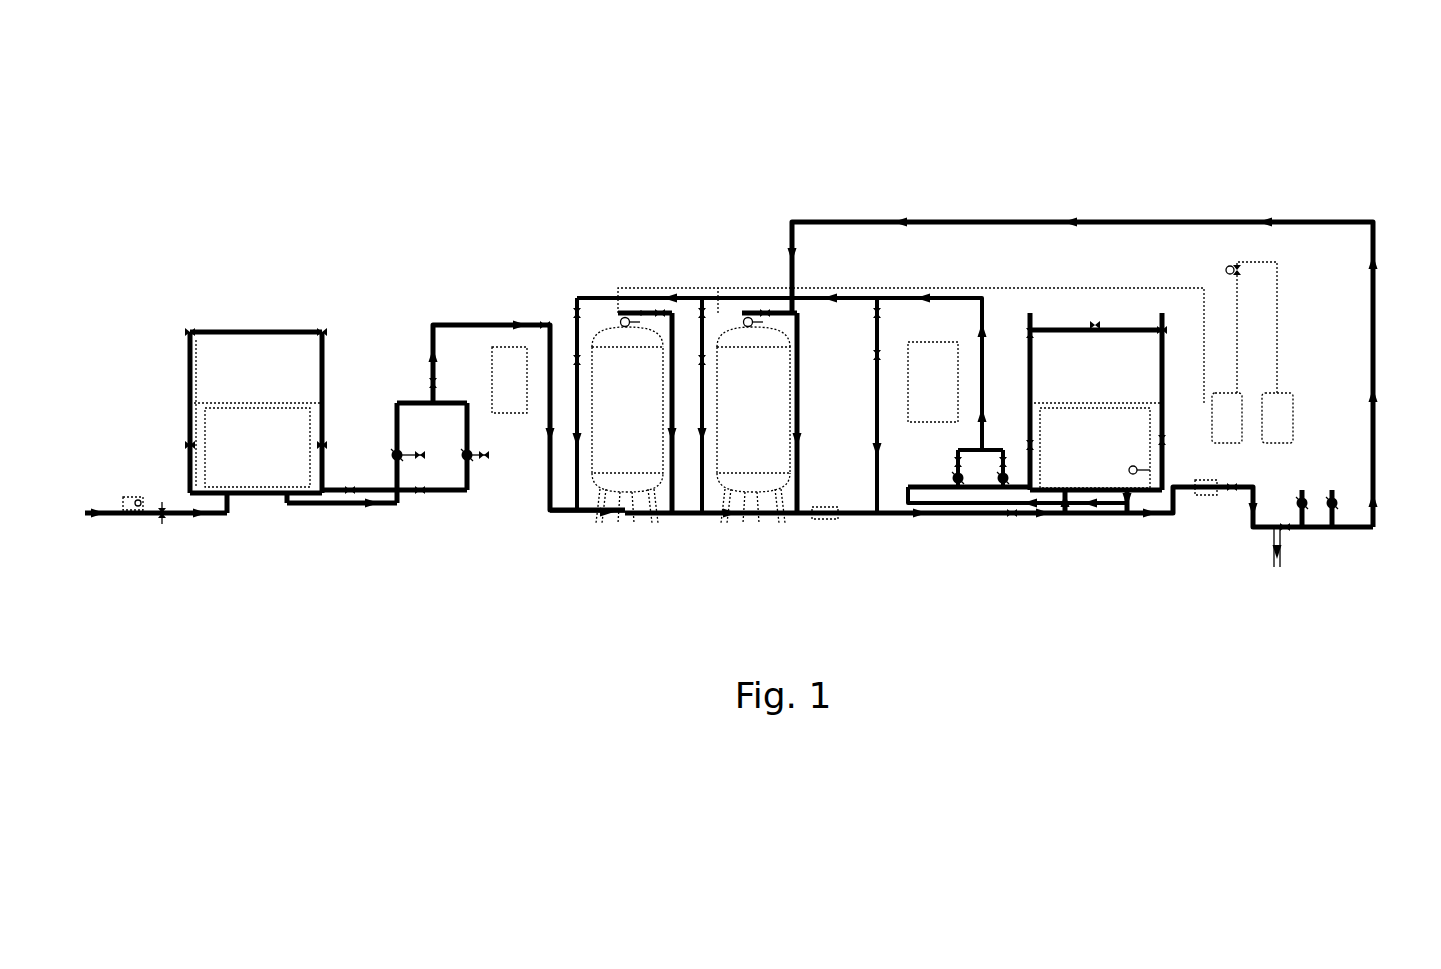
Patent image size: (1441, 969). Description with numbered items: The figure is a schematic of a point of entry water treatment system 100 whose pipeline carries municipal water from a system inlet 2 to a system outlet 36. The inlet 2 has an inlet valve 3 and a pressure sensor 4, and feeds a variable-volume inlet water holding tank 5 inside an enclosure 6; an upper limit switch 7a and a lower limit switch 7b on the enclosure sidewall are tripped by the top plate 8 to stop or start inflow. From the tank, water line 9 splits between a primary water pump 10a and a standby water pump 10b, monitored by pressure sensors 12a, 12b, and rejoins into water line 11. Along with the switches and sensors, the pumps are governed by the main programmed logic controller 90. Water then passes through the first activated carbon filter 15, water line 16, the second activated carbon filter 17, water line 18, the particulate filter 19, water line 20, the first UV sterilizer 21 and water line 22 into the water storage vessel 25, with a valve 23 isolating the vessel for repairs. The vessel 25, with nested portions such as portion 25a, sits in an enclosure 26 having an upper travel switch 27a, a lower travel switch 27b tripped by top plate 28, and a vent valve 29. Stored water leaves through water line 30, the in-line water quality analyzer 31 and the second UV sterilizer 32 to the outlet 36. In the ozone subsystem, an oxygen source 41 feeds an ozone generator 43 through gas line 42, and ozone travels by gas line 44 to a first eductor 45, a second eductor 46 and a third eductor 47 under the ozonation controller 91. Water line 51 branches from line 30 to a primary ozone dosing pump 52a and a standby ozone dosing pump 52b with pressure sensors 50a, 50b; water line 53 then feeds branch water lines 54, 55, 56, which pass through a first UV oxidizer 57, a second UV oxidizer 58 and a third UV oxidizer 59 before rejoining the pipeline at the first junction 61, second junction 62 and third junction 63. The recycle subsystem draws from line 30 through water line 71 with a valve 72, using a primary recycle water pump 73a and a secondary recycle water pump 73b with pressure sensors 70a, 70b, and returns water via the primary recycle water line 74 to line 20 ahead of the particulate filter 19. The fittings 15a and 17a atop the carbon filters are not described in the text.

The water treatment system 100 is at (497, 112).
The system inlet 2 is at (113, 516).
The inlet valve 3 is at (162, 520).
The pressure sensor 4 is at (135, 495).
The inlet water holding tank 5 is at (257, 447).
The enclosure 6 is at (188, 395).
The upper limit switch 7a is at (188, 338).
The lower limit switch 7b is at (188, 445).
The top plate 8 is at (300, 405).
The water line 9 is at (308, 505).
The primary water pump 10a is at (388, 455).
The standby water pump 10b is at (462, 466).
The pressure sensor 12a is at (418, 452).
The pressure sensor 12b is at (486, 455).
The water line 11 is at (472, 322).
The main programmed logic controller 90 is at (509, 380).
The first activated carbon filter 15 is at (627, 425).
The first vessel vent 15a is at (624, 318).
The water line 16 is at (652, 318).
The second activated carbon filter 17 is at (753, 425).
The second vessel vent 17a is at (746, 318).
The water line 18 is at (772, 318).
The particulate filter 19 is at (822, 520).
The water line 20 is at (905, 520).
The first UV sterilizer 21 is at (955, 520).
The water line 22 is at (1012, 520).
The valve 23 is at (1030, 512).
The water storage vessel 25 is at (1095, 448).
The portion of the vessel 25a is at (1150, 468).
The enclosure 26 is at (1165, 360).
The upper travel switch 27a is at (1028, 355).
The lower travel switch 27b is at (1028, 445).
The top plate 28 is at (1120, 403).
The vent valve 29 is at (1094, 322).
The water line 30 is at (1172, 522).
The in-line water quality analyzer 31 is at (1204, 497).
The second UV sterilizer 32 is at (1232, 495).
The system outlet 36 is at (1276, 568).
The oxygen source 41 is at (1277, 418).
The gas line 42 is at (1279, 312).
The ozone generator 43 is at (1244, 352).
The gas line 44 is at (1000, 287).
The first eductor 45 is at (872, 313).
The second eductor 46 is at (700, 358).
The third eductor 47 is at (575, 358).
The pressure sensor 50a is at (950, 478).
The pressure sensor 50b is at (1004, 490).
The water line 51 is at (1132, 522).
The primary ozone dosing pump 52a is at (950, 462).
The standby ozone dosing pump 52b is at (1005, 462).
The water line 53 is at (980, 322).
The first branch water line 54 is at (872, 420).
The second branch water line 55 is at (692, 490).
The third branch water line 56 is at (570, 488).
The first UV oxidizer 57 is at (872, 357).
The second UV oxidizer 58 is at (700, 312).
The third UV oxidizer 59 is at (575, 312).
The first junction 61 is at (878, 520).
The second junction 62 is at (702, 522).
The third junction 63 is at (582, 520).
The pressure sensor 70a is at (1312, 532).
The pressure sensor 70b is at (1340, 532).
The water line 71 is at (1288, 532).
The valve 72 is at (1285, 522).
The primary recycle water pump 73a is at (1305, 492).
The secondary recycle water pump 73b is at (1340, 492).
The primary recycle water line 74 is at (840, 220).
The ozonation controller 91 is at (933, 382).